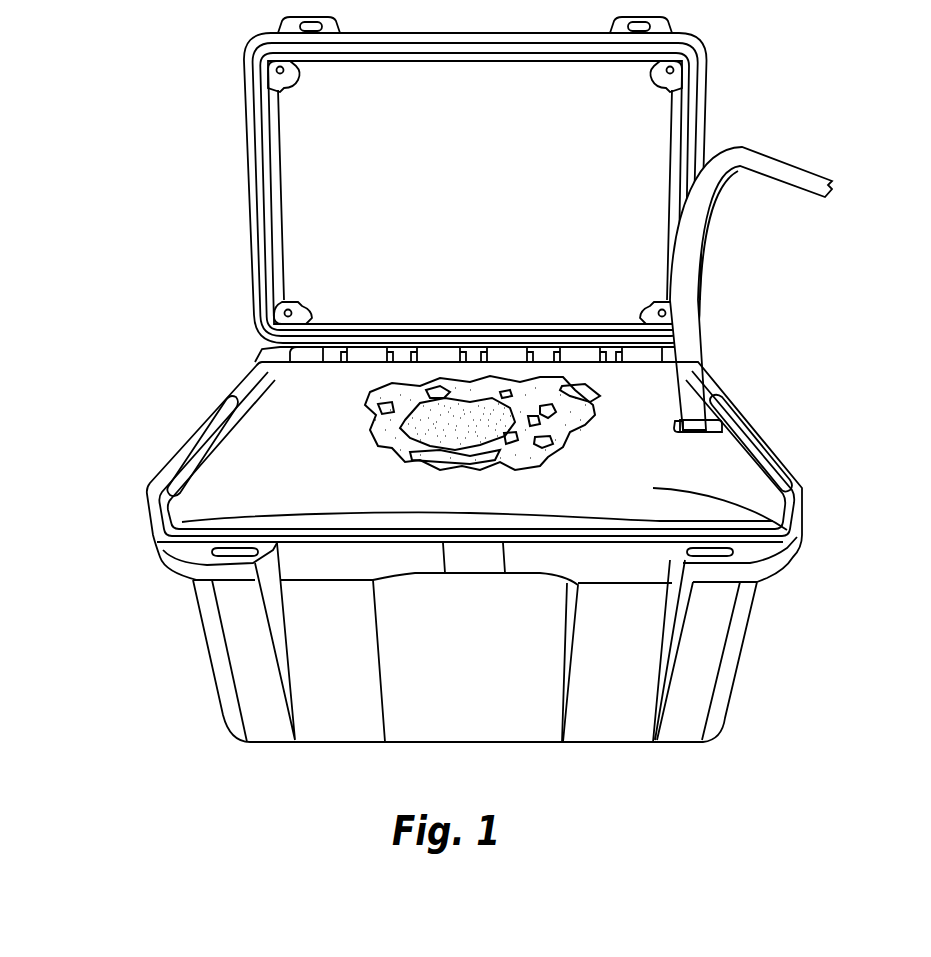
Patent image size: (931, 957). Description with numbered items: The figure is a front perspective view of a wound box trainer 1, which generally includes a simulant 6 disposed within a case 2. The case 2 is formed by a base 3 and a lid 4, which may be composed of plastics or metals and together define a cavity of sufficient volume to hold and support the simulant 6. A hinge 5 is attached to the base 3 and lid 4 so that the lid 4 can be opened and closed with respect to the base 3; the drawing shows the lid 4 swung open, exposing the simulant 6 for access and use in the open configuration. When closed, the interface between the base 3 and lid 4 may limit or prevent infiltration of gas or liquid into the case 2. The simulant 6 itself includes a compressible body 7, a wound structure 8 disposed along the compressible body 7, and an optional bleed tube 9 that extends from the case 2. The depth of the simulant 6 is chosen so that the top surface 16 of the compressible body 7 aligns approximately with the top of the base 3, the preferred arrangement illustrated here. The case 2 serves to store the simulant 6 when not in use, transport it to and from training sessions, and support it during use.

The wound box trainer 1 is at (60, 4).
The case 2 is at (200, 665).
The base 3 is at (203, 597).
The lid 4 is at (250, 140).
The hinge 5 is at (262, 345).
The simulant 6 is at (250, 447).
The compressible body 7 is at (720, 462).
The wound structure 8 is at (515, 378).
The bleed tube 9 is at (797, 173).
The top surface 16 is at (765, 537).